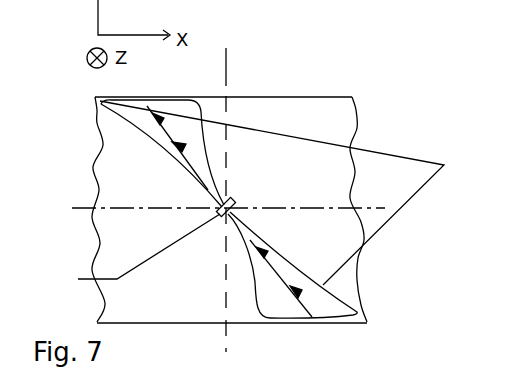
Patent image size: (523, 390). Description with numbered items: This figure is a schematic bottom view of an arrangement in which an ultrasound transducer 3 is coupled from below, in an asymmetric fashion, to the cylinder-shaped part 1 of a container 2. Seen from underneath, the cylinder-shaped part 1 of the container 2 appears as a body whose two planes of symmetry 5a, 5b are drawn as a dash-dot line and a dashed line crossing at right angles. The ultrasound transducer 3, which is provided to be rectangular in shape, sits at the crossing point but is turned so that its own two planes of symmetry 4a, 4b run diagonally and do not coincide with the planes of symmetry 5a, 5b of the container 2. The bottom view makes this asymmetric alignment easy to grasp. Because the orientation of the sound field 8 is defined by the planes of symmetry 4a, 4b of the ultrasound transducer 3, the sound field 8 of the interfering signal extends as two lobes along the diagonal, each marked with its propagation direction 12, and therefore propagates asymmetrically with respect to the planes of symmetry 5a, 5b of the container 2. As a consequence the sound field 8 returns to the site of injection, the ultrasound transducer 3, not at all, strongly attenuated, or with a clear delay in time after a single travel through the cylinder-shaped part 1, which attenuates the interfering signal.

The cylinder-shaped part 1 is at (229, 226).
The container 2 is at (151, 329).
The ultrasound transducer 3 is at (136, 256).
The plane of symmetry 4a is at (234, 200).
The plane of symmetry 4b is at (203, 175).
The plane of symmetry 5a is at (378, 208).
The plane of symmetry 5b is at (226, 64).
The sound field 8 is at (284, 193).
The propagation direction 12 is at (172, 135).